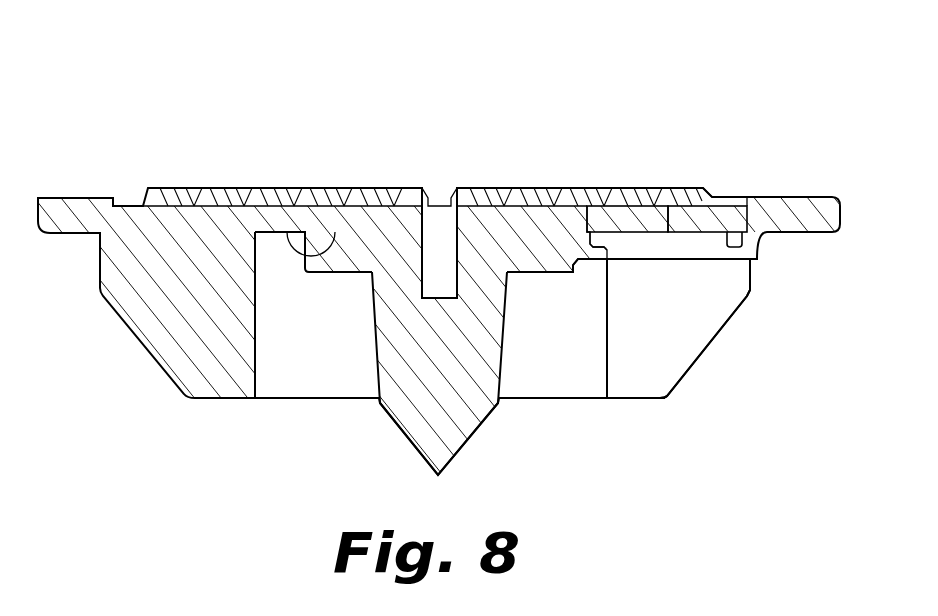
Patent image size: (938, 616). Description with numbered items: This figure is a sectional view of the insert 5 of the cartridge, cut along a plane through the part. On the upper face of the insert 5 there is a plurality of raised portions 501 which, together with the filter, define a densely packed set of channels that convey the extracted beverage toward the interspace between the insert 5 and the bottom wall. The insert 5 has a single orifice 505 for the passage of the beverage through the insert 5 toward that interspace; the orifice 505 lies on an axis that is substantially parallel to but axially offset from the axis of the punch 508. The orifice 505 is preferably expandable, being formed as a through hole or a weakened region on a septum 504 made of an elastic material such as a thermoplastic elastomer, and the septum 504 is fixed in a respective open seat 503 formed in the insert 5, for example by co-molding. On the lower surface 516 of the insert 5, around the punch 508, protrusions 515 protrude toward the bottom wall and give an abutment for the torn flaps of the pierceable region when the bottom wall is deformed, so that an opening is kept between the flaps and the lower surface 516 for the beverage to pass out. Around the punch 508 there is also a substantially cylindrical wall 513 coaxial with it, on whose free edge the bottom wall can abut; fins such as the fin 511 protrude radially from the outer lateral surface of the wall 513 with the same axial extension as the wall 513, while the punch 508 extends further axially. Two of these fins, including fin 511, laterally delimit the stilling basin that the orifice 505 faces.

The insert 5 is at (84, 163).
The raised portions 501 is at (250, 200).
The open seat 503 is at (737, 240).
The septum 504 is at (708, 218).
The orifice 505 is at (668, 222).
The punch 508 is at (447, 413).
The fin 511 is at (657, 343).
The substantially cylindrical wall 513 is at (325, 352).
The protrusions 515 is at (543, 258).
The lower surface 516 is at (315, 252).